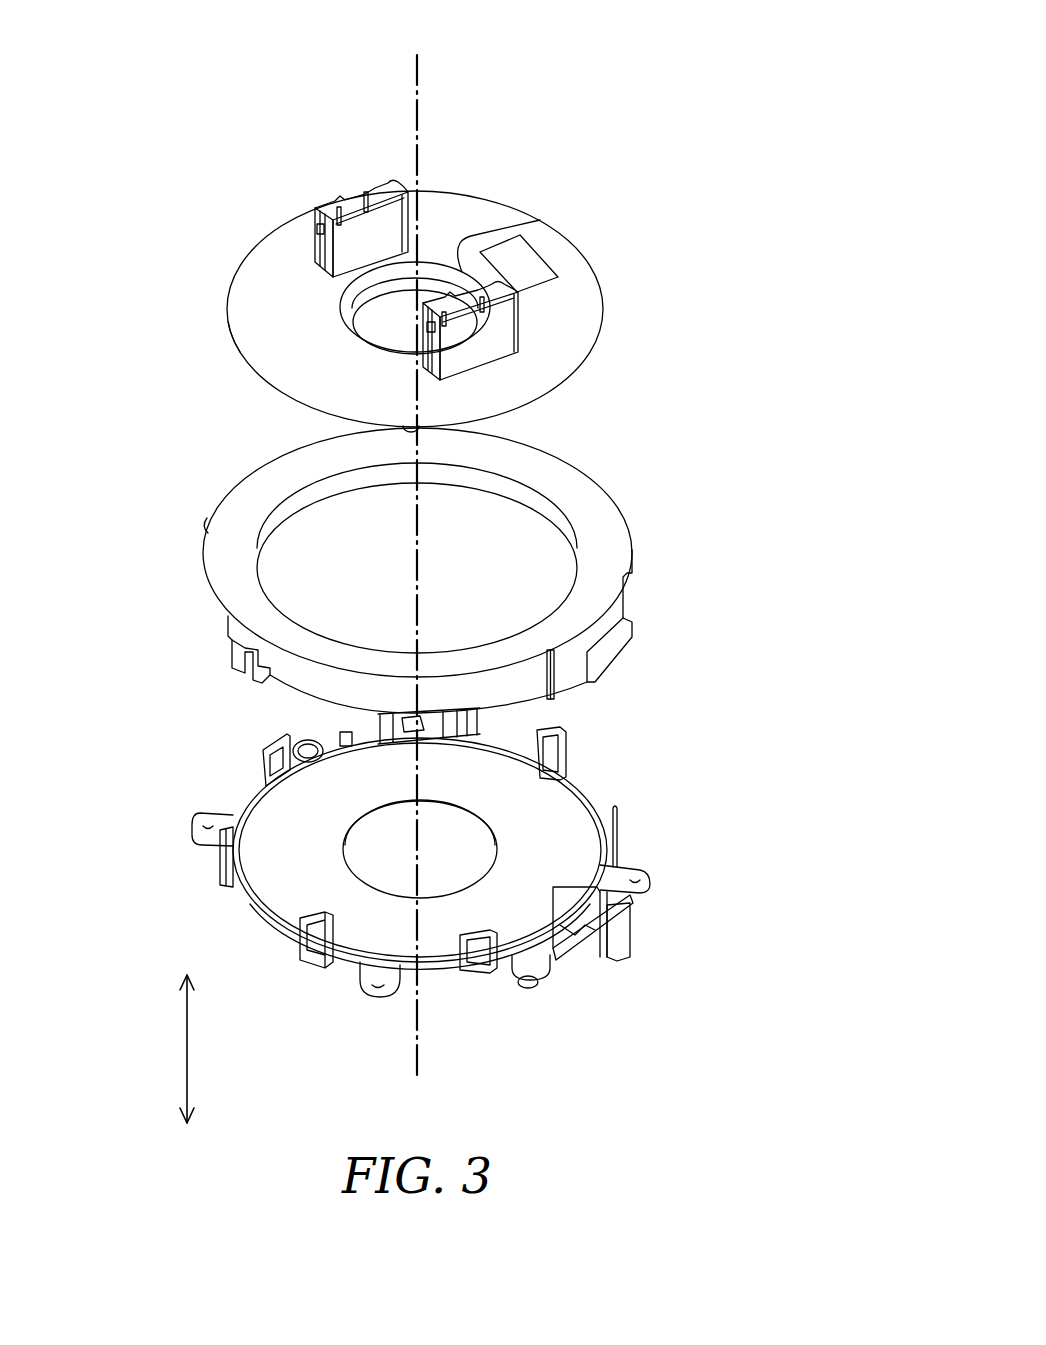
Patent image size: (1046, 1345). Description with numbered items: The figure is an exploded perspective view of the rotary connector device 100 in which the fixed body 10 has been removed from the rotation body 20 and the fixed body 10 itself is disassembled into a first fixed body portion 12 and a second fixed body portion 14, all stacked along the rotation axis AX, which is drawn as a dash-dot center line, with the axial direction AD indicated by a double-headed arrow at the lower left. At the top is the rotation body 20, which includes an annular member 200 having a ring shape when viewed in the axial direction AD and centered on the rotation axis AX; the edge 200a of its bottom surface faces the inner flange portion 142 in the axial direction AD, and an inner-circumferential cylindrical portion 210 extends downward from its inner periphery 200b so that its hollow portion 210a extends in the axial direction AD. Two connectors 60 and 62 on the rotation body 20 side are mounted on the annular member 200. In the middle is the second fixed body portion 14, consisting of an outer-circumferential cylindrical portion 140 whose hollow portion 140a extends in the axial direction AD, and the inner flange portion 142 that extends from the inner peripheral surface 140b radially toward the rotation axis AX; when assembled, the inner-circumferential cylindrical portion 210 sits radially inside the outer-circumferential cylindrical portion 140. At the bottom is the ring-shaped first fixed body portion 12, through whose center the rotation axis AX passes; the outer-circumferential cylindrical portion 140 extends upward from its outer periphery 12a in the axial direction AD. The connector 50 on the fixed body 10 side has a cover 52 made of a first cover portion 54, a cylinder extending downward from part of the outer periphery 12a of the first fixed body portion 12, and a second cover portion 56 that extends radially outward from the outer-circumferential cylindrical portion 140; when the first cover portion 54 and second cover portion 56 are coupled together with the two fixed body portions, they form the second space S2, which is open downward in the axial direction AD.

The rotary connector device 100 is at (692, 106).
The fixed body 10 is at (762, 426).
The first fixed body portion 12 is at (372, 937).
The outer periphery 12a is at (250, 802).
The second fixed body portion 14 is at (720, 488).
The outer-circumferential cylindrical portion 140 is at (610, 617).
The hollow portion 140a is at (288, 540).
The inner peripheral surface 140b is at (318, 493).
The inner flange portion 142 is at (587, 530).
The rotation body 20 is at (160, 199).
The annular member 200 is at (262, 290).
The edge of bottom surface 200a is at (245, 340).
The inner periphery 200b is at (522, 237).
The inner-circumferential cylindrical portion 210 is at (360, 299).
The hollow portion 210a is at (395, 302).
The connector 60 is at (355, 203).
The connector 62 is at (503, 340).
The connector 50 is at (778, 722).
The cover 52 is at (765, 745).
The first cover portion 54 is at (617, 940).
The second cover portion 56 is at (570, 686).
The second space S2 is at (581, 912).
The rotation axis AX is at (420, 108).
The axial direction AD is at (190, 1038).